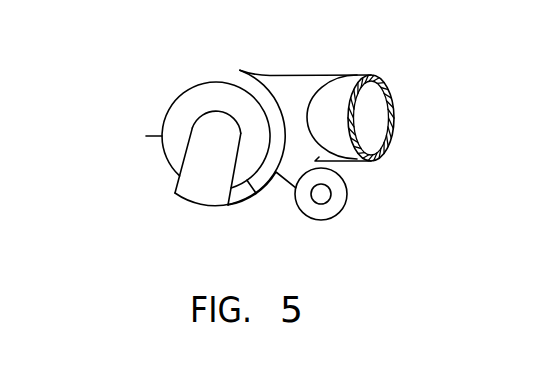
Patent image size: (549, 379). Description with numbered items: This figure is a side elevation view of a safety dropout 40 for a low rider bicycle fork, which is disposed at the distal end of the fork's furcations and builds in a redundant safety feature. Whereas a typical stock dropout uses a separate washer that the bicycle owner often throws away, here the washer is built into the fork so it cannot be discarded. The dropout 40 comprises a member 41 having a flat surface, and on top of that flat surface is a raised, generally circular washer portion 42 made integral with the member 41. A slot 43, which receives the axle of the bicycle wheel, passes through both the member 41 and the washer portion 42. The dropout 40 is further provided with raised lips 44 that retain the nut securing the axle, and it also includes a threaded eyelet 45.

The safety dropout 40 is at (120, 114).
The member 41 is at (221, 72).
The washer portion 42 is at (197, 93).
The slot 43 is at (207, 190).
The raised lips 44 is at (158, 173).
The threaded eyelet 45 is at (331, 197).